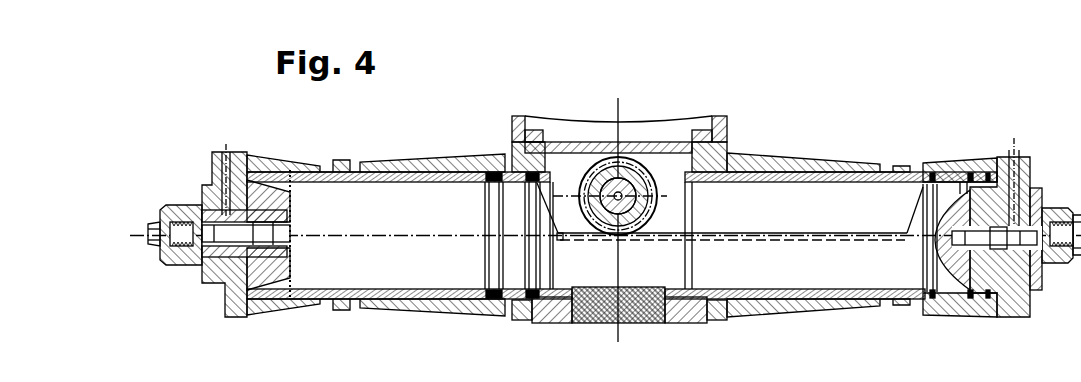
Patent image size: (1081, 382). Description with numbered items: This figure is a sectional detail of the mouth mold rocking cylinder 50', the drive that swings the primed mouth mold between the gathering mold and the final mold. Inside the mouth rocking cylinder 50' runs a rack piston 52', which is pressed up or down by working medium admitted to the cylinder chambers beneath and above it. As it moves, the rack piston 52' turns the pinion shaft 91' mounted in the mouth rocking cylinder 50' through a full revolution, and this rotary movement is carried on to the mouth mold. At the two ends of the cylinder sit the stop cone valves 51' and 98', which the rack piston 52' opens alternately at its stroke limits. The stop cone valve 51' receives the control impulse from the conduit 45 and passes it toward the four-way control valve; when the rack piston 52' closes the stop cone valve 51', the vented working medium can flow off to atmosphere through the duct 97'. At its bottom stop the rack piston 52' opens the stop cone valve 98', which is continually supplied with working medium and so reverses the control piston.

The stop cone valve 98' is at (230, 225).
The conduit 45 is at (157, 250).
The mouth rocking cylinder 50' is at (515, 193).
The pinion shaft 91' is at (626, 157).
The rack piston 52' is at (740, 185).
The stop cone valve 51' is at (1002, 227).
The duct 97' is at (1013, 295).